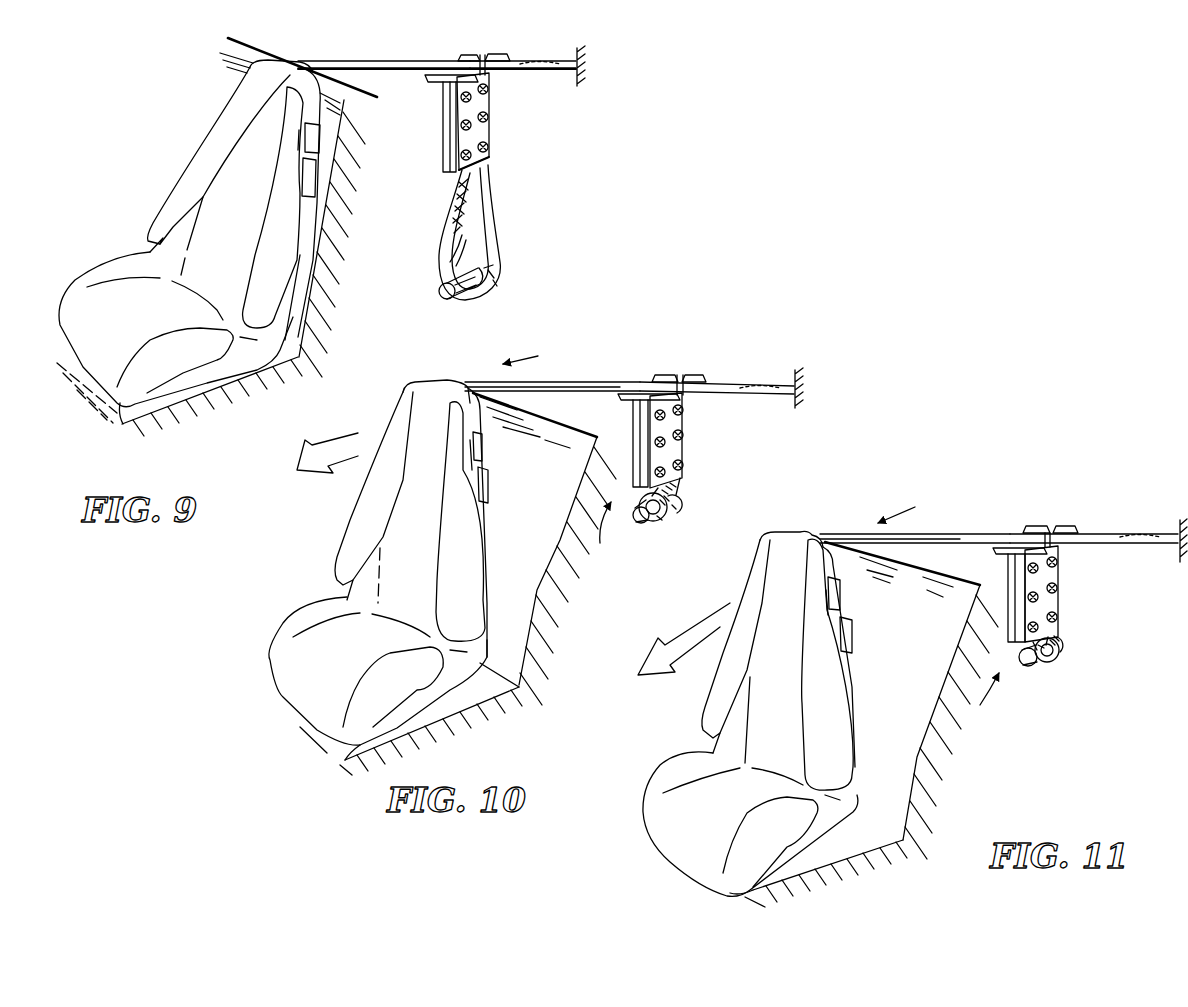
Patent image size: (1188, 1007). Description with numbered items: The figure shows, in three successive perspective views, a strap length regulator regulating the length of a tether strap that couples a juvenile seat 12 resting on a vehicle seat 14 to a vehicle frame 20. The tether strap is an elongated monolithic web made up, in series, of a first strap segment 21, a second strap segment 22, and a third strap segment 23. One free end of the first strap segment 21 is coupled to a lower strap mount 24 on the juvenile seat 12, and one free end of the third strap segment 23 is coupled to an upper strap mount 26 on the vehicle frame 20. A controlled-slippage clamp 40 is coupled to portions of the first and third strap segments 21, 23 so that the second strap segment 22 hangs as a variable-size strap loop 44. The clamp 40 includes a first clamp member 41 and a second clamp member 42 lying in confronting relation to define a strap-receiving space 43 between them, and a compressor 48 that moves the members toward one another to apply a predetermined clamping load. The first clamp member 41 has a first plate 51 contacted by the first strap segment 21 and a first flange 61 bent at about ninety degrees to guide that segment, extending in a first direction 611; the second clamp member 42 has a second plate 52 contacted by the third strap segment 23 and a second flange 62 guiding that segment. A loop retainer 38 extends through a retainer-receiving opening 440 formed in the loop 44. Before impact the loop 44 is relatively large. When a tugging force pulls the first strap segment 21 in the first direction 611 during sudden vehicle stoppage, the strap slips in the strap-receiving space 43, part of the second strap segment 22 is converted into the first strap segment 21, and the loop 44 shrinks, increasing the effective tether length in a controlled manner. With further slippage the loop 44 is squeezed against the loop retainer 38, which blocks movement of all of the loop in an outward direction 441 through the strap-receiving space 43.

In FIG. 9, the juvenile seat 12 is at (125, 296).
In FIG. 10, the juvenile seat 12 is at (324, 667).
In FIG. 11, the juvenile seat 12 is at (714, 794).
In FIG. 9, the vehicle seat 14 is at (301, 335).
In FIG. 10, the vehicle seat 14 is at (523, 587).
In FIG. 11, the vehicle seat 14 is at (908, 740).
In FIG. 9, the vehicle frame 20 is at (585, 66).
In FIG. 10, the vehicle frame 20 is at (800, 382).
In FIG. 11, the vehicle frame 20 is at (1178, 522).
In FIG. 9, the first strap segment 21 is at (393, 70).
In FIG. 10, the first strap segment 21 is at (578, 381).
In FIG. 11, the first strap segment 21 is at (960, 540).
In FIG. 9, the second strap segment 22 is at (451, 232).
In FIG. 10, the second strap segment 22 is at (672, 492).
In FIG. 11, the second strap segment 22 is at (1043, 664).
In FIG. 9, the third strap segment 23 is at (562, 70).
In FIG. 10, the third strap segment 23 is at (735, 383).
In FIG. 11, the third strap segment 23 is at (1092, 541).
In FIG. 9, the lower strap mount 24 is at (290, 78).
In FIG. 10, the lower strap mount 24 is at (462, 385).
In FIG. 11, the lower strap mount 24 is at (820, 535).
In FIG. 9, the upper strap mount 26 is at (546, 62).
In FIG. 10, the upper strap mount 26 is at (791, 395).
In FIG. 11, the upper strap mount 26 is at (1170, 545).
In FIG. 9, the loop retainer 38 is at (447, 299).
In FIG. 10, the loop retainer 38 is at (638, 516).
In FIG. 11, the loop retainer 38 is at (1059, 645).
In FIG. 9, the controlled-slippage clamp 40 is at (504, 50).
In FIG. 10, the controlled-slippage clamp 40 is at (705, 366).
In FIG. 11, the controlled-slippage clamp 40 is at (1053, 523).
In FIG. 9, the first clamp member 41 is at (434, 136).
In FIG. 10, the first clamp member 41 is at (630, 439).
In FIG. 11, the first clamp member 41 is at (1006, 583).
In FIG. 9, the second clamp member 42 is at (524, 121).
In FIG. 10, the second clamp member 42 is at (686, 450).
In FIG. 11, the second clamp member 42 is at (1061, 578).
In FIG. 9, the strap-receiving space 43 is at (486, 52).
In FIG. 10, the strap-receiving space 43 is at (678, 373).
In FIG. 11, the strap-receiving space 43 is at (1067, 522).
In FIG. 9, the variable-size strap loop 44 is at (487, 300).
In FIG. 10, the variable-size strap loop 44 is at (657, 534).
In FIG. 11, the variable-size strap loop 44 is at (1076, 655).
In FIG. 9, the compressor 48 is at (492, 163).
In FIG. 9, the first plate 51 is at (443, 112).
In FIG. 9, the second plate 52 is at (490, 112).
In FIG. 9, the first flange 61 is at (435, 83).
In FIG. 9, the second flange 62 is at (490, 86).
In FIG. 9, the retainer-receiving opening 440 is at (452, 262).
In FIG. 10, the outward direction 441 is at (605, 533).
In FIG. 11, the outward direction 441 is at (977, 700).
In FIG. 10, the first direction 611 is at (536, 350).
In FIG. 11, the first direction 611 is at (912, 504).